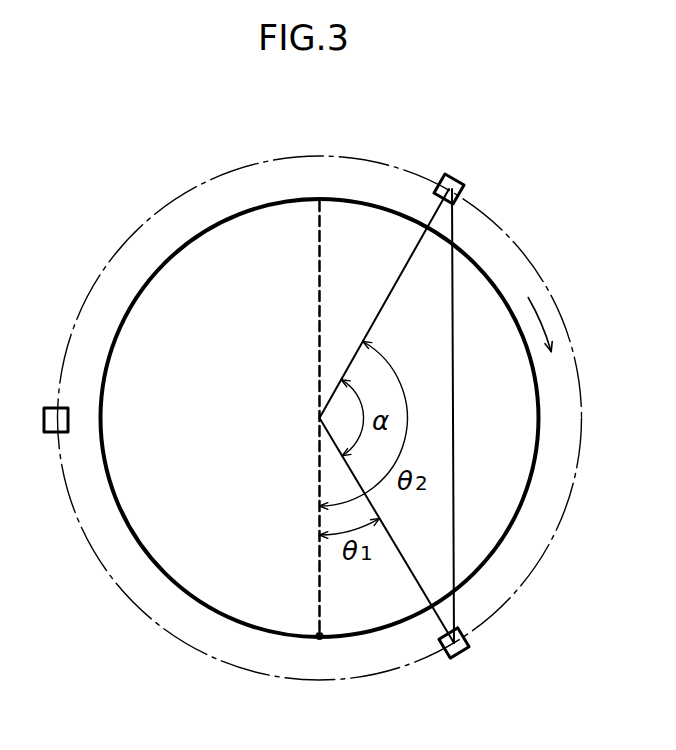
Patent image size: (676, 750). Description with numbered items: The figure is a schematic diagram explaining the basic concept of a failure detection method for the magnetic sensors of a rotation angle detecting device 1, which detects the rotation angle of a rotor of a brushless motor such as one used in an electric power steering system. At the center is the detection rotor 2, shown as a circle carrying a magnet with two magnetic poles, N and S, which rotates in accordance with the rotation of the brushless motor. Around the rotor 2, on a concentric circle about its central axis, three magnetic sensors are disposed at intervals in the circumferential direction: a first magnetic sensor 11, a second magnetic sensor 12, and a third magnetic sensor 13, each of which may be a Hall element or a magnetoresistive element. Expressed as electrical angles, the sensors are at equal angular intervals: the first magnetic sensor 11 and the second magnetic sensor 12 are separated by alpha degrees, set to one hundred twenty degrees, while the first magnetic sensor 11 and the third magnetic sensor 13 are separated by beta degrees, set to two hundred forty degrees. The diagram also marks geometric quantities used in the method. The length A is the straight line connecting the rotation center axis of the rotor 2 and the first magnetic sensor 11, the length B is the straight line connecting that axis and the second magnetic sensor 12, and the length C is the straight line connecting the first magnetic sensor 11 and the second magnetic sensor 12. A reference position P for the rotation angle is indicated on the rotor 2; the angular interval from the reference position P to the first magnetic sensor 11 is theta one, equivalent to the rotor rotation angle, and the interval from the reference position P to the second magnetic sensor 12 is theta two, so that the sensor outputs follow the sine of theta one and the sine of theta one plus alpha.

The rotation angle detecting device 1 is at (412, 148).
The detection rotor 2 is at (167, 258).
The first magnetic sensor 11 is at (460, 657).
The second magnetic sensor 12 is at (466, 184).
The third magnetic sensor 13 is at (56, 408).
The reference position P is at (320, 641).
The length of straight line connecting rotation center axis and first magnetic senso A is at (397, 553).
The length of straight line connecting rotation center axis and second magnetic sens B is at (382, 307).
The length of straight line connecting first and second magnetic sensors C is at (453, 320).